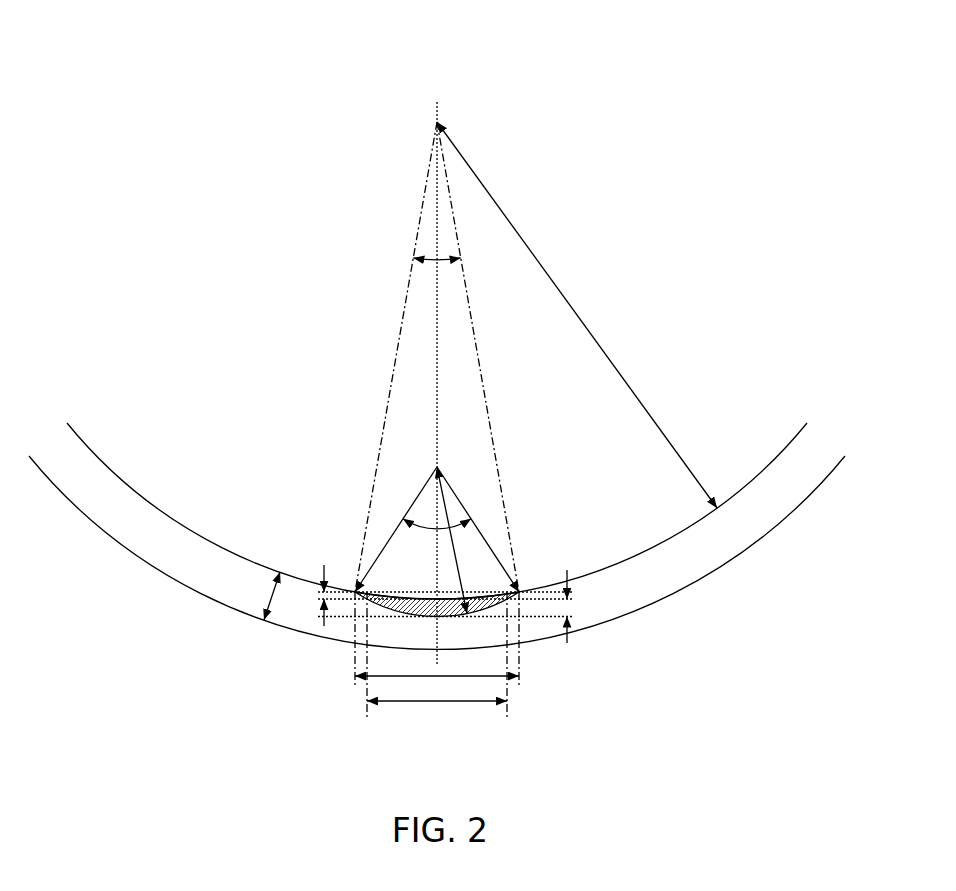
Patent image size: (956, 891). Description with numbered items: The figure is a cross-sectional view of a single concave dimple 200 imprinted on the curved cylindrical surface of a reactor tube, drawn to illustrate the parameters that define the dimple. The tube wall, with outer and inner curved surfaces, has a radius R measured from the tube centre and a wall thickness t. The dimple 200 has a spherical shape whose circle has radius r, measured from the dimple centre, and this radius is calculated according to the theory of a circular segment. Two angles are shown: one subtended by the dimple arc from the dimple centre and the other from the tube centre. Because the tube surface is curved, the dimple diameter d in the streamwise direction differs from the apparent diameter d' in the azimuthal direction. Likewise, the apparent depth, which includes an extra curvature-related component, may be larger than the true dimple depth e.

The dimple 200 is at (133, 144).
The tube radius R is at (577, 315).
The dimple radius r is at (454, 540).
The wall thickness t is at (267, 596).
The true dimple depth e is at (579, 606).
The apparent diameter in azimuthal direction d' is at (437, 664).
The dimple diameter in streamwise direction d is at (437, 712).